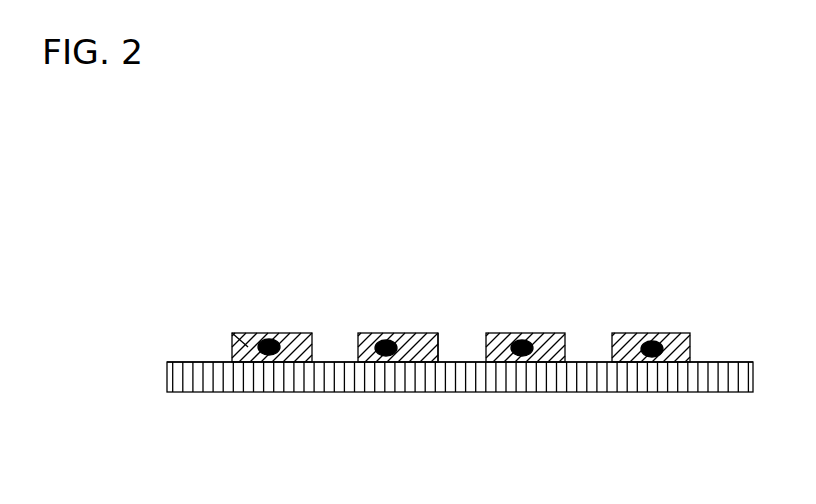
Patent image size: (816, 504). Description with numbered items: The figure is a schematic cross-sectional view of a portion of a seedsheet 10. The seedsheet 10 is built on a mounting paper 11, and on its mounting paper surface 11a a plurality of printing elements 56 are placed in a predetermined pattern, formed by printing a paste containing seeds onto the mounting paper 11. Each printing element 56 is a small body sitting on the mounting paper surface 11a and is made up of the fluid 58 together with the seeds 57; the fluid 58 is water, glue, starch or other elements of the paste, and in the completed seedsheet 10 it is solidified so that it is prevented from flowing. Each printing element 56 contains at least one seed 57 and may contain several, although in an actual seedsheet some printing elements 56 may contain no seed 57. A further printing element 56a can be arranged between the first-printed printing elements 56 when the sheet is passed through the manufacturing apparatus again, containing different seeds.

The seedsheet 10 is at (372, 266).
The mounting paper 11 is at (449, 392).
The mounting paper surface 11a is at (730, 362).
The printing element 56 is at (297, 348).
The printing element 56a is at (438, 333).
The seed 57 is at (268, 342).
The fluid 58 is at (232, 333).